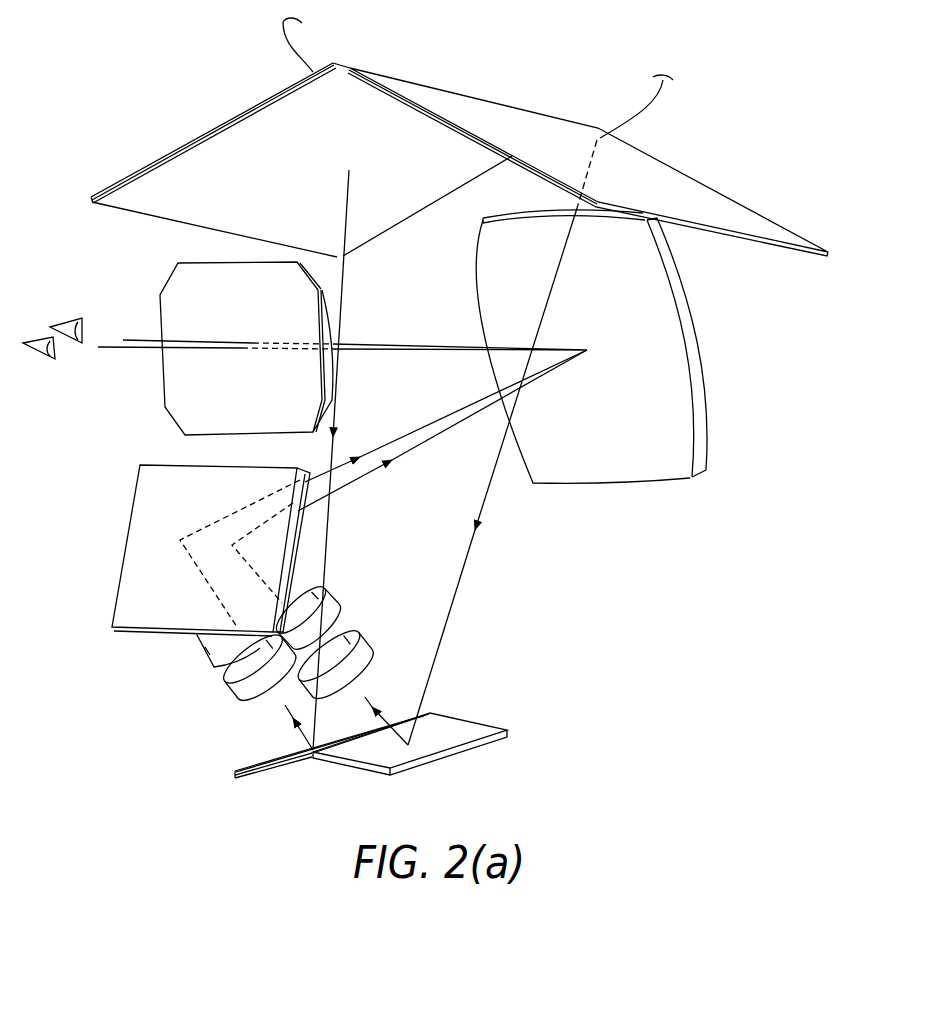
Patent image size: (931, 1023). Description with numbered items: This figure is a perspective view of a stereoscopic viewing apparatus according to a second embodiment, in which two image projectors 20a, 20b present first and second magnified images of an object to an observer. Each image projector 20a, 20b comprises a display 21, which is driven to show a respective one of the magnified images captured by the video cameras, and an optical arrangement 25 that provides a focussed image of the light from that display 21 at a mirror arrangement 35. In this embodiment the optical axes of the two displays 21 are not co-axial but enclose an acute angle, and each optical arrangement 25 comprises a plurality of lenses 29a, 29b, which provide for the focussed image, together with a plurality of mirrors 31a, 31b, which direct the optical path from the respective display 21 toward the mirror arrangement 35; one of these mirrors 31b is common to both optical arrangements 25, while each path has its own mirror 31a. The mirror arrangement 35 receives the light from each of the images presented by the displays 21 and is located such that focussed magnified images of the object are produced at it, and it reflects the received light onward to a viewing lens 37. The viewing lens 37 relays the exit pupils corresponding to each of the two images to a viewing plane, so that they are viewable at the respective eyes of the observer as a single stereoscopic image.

The image projector 20a is at (789, 205).
The image projector 20b is at (113, 160).
The display 21 is at (214, 108).
The optical arrangement 25 is at (221, 773).
The lens 29a is at (370, 650).
The lens 29b is at (332, 603).
The mirror 31a is at (272, 775).
The mirror 31b is at (140, 493).
The mirror arrangement 35 is at (720, 399).
The viewing lens 37 is at (148, 301).